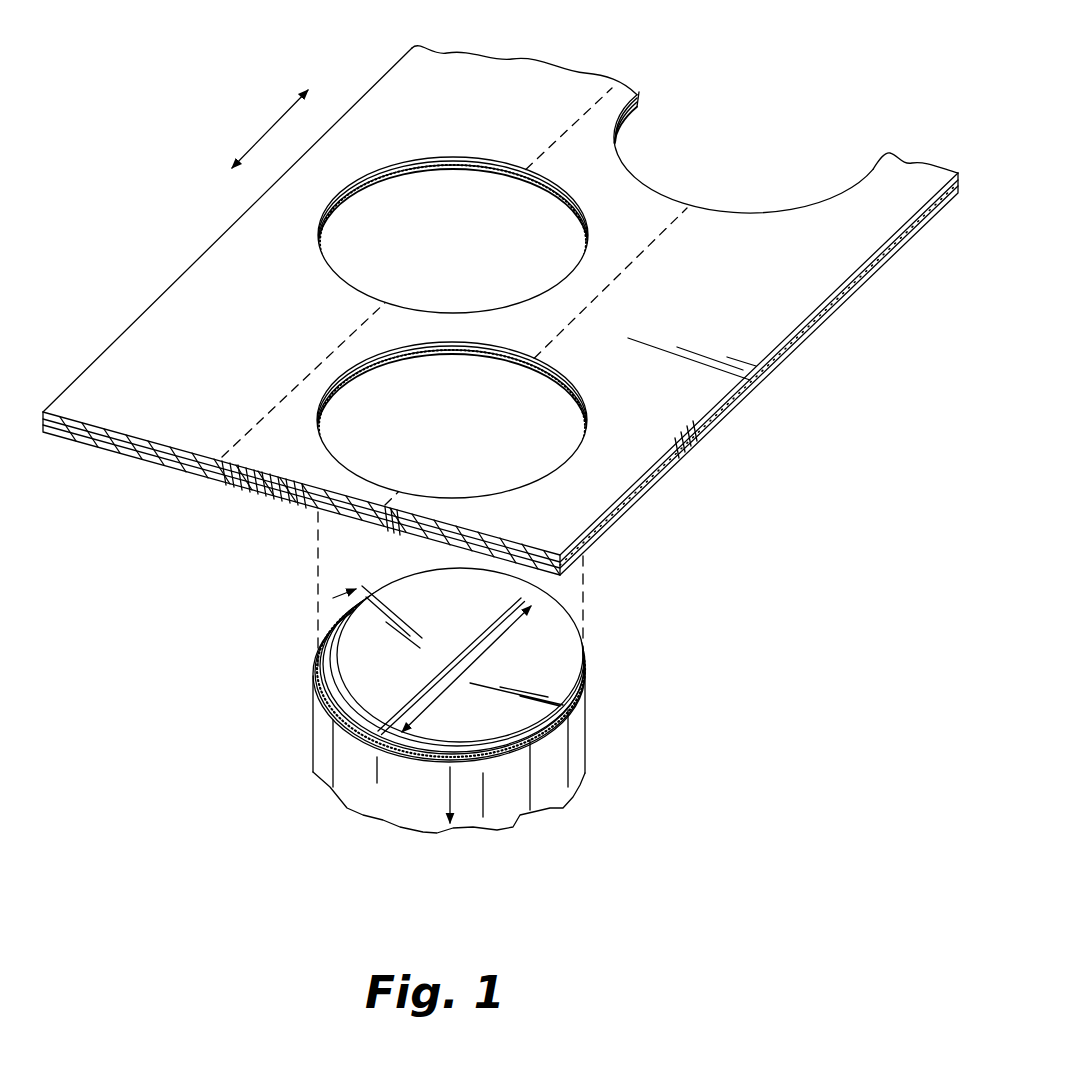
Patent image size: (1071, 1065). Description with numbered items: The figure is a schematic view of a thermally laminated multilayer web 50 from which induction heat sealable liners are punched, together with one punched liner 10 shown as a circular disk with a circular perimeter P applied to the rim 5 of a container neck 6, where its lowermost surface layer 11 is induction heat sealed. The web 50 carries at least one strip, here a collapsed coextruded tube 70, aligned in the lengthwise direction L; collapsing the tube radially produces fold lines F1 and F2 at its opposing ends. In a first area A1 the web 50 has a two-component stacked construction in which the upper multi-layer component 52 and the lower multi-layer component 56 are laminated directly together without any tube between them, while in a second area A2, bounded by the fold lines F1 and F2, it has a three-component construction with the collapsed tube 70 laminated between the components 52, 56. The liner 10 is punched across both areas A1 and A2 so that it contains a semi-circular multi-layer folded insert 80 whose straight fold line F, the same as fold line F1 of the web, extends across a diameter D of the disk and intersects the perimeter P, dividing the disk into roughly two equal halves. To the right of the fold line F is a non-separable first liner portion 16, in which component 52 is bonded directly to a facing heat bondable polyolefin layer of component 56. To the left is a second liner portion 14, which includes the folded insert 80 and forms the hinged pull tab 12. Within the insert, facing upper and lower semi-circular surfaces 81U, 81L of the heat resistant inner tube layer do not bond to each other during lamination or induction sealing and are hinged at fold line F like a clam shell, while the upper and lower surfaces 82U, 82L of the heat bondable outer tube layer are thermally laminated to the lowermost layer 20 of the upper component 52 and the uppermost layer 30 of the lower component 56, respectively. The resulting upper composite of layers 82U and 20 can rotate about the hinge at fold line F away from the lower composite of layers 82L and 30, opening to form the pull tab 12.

The laminated web 50 is at (380, 77).
The upper multi-layer component 52 is at (130, 404).
The lower multi-layer component 56 is at (98, 443).
The collapsed coextruded tube 70 is at (306, 497).
The induction heat sealable liner 10 is at (610, 603).
The hinged pull tab 12 is at (335, 617).
The second liner portion 14 is at (310, 677).
The first liner portion 16 is at (589, 653).
The upper semi-circular surface of inner tube layer 81U is at (332, 651).
The lower semi-circular surface of inner tube layer 81L is at (322, 661).
The upper semi-circular surface of outer tube layer 82U is at (345, 687).
The lower semi-circular surface of outer tube layer 82L is at (325, 725).
The multi-layer folded insert 80 is at (356, 736).
The container rim 5 is at (563, 723).
The container neck 6 is at (580, 752).
The lowermost surface layer 11 is at (538, 742).
The lowermost layer of upper component 20 is at (510, 737).
The uppermost layer of lower component 30 is at (487, 755).
The lengthwise direction L is at (268, 128).
The first area A1 is at (230, 240).
The second area A2 is at (617, 251).
The fold line F1 is at (592, 303).
The fold line F2 is at (382, 309).
The fold line of folded insert F is at (457, 652).
The diameter D is at (470, 670).
The circular perimeter P is at (590, 662).